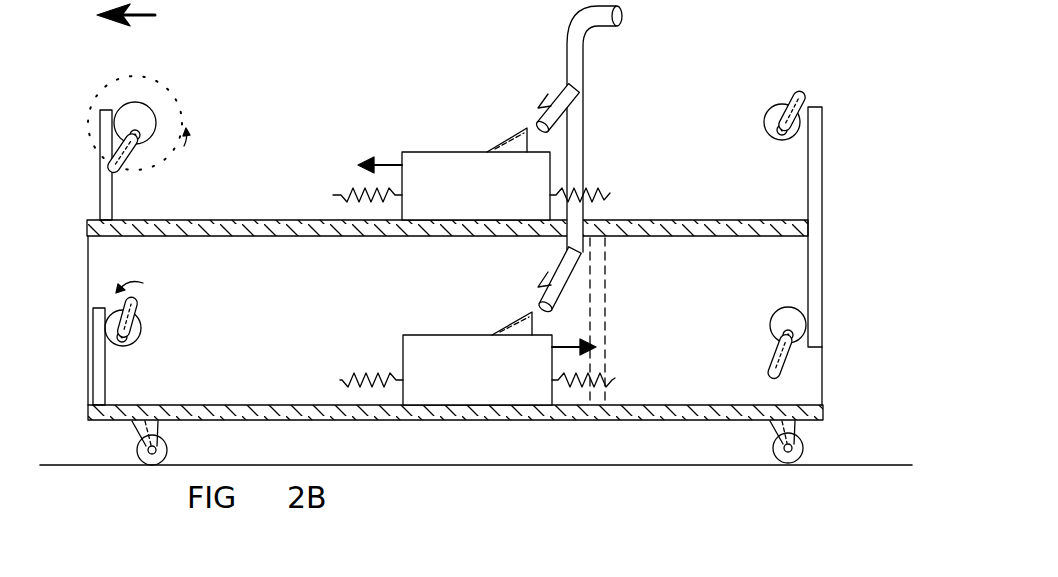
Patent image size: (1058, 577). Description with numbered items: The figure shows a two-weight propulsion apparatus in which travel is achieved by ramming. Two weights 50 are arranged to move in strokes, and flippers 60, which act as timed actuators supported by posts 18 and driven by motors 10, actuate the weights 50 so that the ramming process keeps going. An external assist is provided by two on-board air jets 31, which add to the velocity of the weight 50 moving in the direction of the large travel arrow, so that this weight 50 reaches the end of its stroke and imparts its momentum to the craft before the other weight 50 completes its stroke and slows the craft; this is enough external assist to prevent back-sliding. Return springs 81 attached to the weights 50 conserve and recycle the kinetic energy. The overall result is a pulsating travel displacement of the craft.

The motor 10 is at (160, 118).
The post 18 is at (100, 202).
The air jet 31 is at (585, 138).
The weight 50 is at (452, 147).
The flipper 60 is at (128, 170).
The return spring 81 is at (333, 195).